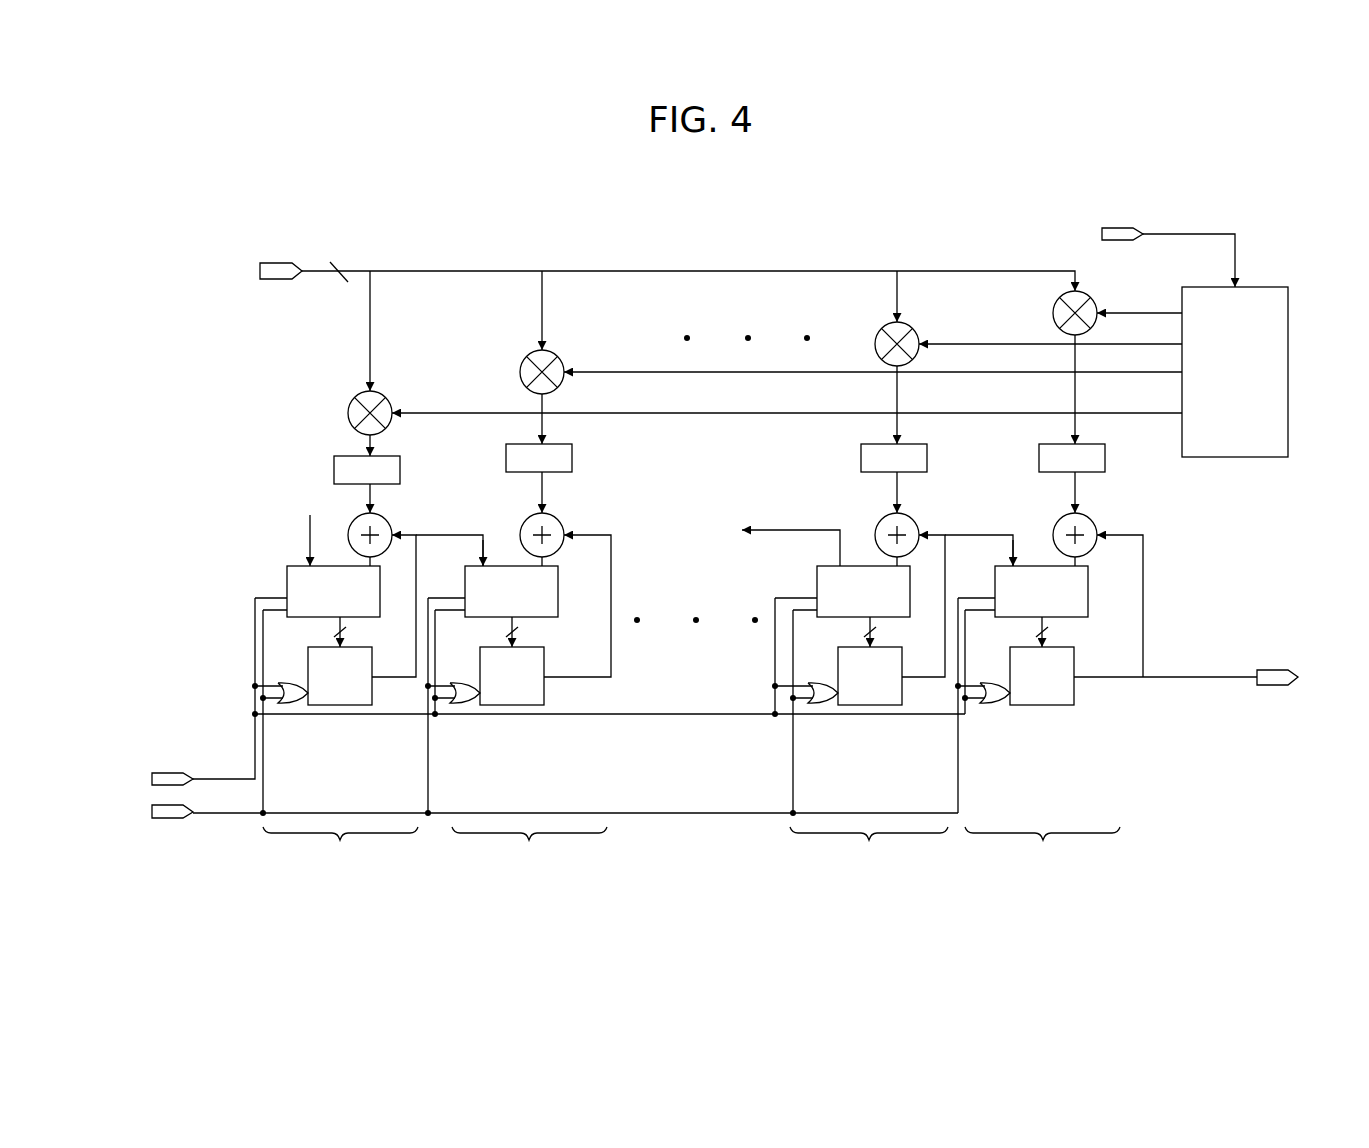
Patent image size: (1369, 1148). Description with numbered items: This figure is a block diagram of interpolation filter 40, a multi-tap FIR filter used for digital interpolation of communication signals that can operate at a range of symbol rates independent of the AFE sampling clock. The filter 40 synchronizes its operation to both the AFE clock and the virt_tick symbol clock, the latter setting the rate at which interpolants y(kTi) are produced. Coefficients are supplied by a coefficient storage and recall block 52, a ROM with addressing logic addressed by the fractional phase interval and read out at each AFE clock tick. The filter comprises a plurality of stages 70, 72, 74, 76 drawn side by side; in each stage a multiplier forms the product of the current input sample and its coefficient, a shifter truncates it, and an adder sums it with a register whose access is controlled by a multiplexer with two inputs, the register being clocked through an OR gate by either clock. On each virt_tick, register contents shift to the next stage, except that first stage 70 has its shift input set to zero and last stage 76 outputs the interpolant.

The interpolation filter 40 is at (212, 198).
The coefficient storage and recall block 52 is at (1288, 318).
The first stage 70 is at (340, 852).
The stage 72 is at (529, 852).
The stage 74 is at (869, 852).
The last stage 76 is at (1042, 852).